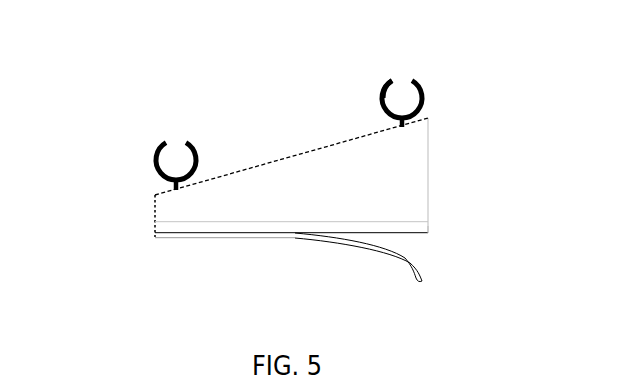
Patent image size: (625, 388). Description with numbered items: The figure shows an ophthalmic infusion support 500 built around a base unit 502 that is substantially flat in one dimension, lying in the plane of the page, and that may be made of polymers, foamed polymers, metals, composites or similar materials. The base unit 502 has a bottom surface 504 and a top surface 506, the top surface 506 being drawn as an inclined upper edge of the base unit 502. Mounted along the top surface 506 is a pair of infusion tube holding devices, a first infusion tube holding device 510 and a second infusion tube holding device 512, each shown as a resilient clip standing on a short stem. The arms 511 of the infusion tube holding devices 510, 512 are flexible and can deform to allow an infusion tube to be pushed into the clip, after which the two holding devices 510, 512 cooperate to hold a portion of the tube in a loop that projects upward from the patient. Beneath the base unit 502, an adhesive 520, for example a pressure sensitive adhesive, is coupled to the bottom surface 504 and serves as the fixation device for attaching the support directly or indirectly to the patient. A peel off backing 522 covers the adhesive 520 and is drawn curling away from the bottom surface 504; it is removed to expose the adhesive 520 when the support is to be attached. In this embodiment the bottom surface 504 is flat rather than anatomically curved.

The ophthalmic infusion support 500 is at (150, 302).
The base unit 502 is at (168, 205).
The bottom surface 504 is at (187, 222).
The top surface 506 is at (277, 160).
The first infusion tube holding device 510 is at (425, 87).
The arms 511 is at (385, 78).
The second infusion tube holding device 512 is at (153, 148).
The adhesive 520 is at (428, 233).
The peel off backing 522 is at (421, 281).